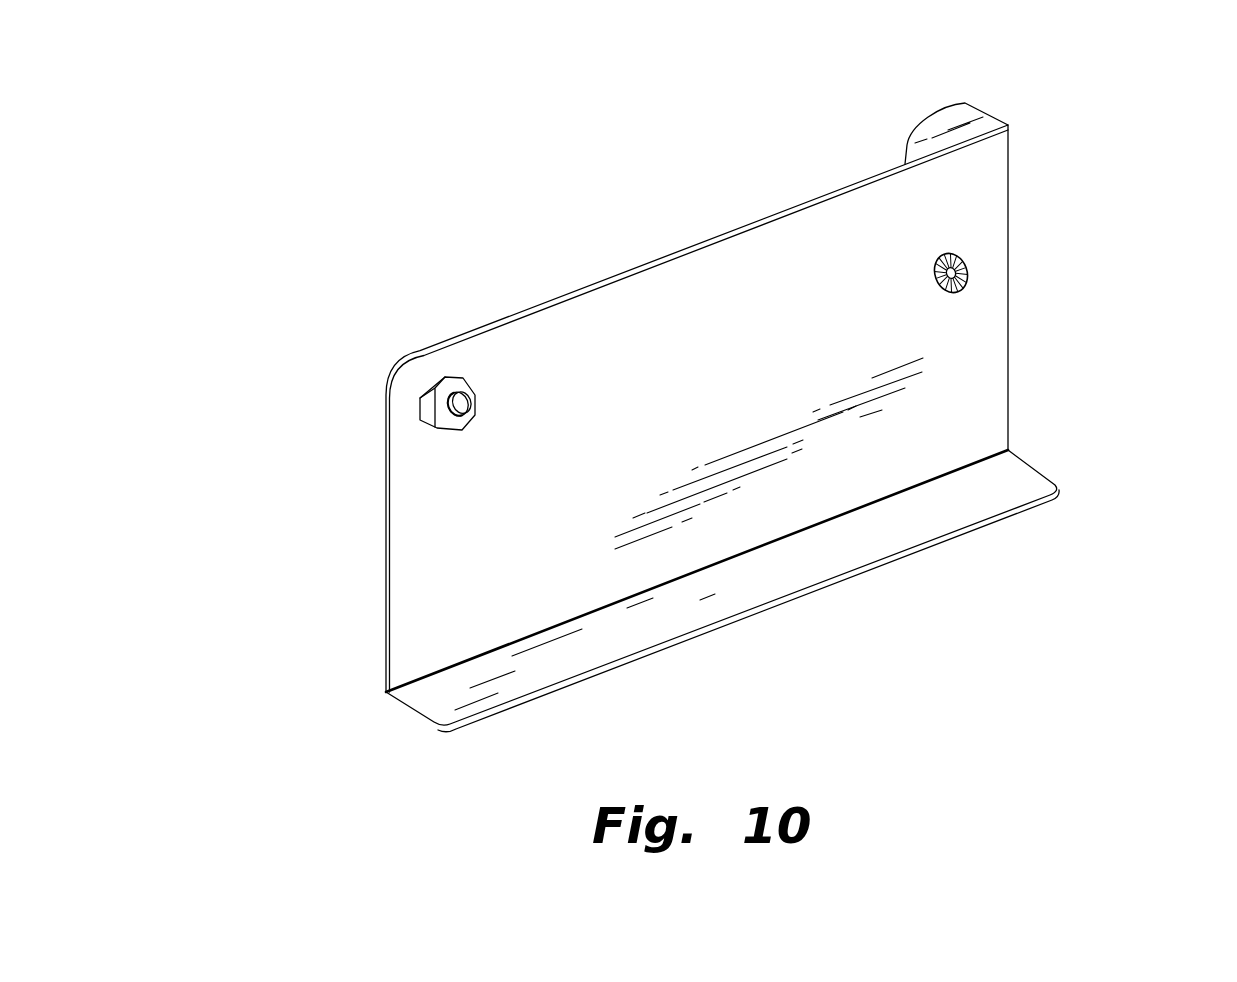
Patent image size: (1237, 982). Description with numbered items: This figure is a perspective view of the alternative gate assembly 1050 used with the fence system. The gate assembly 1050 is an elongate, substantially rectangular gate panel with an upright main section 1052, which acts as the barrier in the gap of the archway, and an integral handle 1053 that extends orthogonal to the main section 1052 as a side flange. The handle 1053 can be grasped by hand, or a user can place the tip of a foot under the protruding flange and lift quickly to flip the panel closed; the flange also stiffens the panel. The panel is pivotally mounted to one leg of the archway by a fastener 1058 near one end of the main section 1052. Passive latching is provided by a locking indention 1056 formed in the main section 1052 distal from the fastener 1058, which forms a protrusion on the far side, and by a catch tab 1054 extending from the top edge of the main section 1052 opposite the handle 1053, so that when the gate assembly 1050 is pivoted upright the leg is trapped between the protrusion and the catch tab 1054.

The alternative gate assembly 1050 is at (520, 242).
The main section 1052 is at (432, 547).
The handle 1053 is at (758, 578).
The catch tab 1054 is at (988, 120).
The locking indention 1056 is at (970, 272).
The fastener 1058 is at (435, 387).